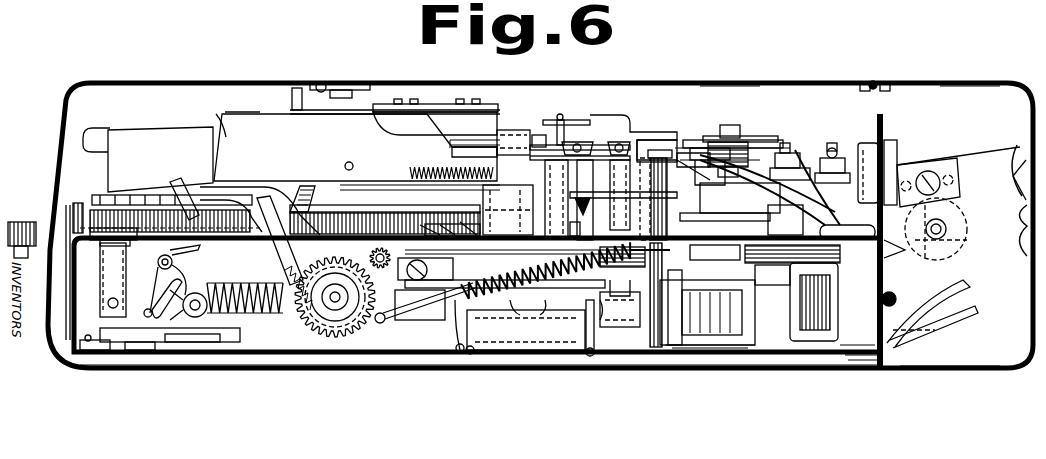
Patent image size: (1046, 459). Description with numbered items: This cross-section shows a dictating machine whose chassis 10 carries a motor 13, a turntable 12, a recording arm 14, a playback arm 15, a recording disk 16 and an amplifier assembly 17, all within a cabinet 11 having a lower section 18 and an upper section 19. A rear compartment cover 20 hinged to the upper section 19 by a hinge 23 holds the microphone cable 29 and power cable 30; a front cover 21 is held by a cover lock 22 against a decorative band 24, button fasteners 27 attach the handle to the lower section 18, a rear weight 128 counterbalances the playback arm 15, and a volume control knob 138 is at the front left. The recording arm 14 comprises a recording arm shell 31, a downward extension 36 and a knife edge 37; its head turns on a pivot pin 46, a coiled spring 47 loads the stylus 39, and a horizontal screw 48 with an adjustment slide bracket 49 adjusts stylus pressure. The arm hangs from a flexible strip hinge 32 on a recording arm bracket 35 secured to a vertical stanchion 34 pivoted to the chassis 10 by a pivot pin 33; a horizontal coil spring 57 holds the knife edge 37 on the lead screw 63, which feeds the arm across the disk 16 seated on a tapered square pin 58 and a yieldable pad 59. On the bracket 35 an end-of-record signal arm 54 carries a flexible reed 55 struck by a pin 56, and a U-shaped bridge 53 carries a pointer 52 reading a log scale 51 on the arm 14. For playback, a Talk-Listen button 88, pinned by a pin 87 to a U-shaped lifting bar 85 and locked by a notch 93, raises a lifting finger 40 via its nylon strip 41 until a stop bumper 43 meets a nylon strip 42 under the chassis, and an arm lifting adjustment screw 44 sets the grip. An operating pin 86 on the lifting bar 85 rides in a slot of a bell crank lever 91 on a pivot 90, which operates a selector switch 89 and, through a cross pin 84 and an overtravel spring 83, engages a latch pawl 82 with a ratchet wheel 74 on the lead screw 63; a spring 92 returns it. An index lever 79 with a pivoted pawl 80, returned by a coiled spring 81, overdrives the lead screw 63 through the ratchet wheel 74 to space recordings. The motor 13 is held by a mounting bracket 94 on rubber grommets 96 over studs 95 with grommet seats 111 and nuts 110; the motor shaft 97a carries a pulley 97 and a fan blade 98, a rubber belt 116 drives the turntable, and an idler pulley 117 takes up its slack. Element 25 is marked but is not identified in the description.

The frame 10 is at (893, 254).
The housing 11 is at (86, 81).
The end wall 12 is at (90, 225).
The motor 13 is at (888, 286).
The cover plate 14 is at (236, 100).
The bracket 15 is at (104, 162).
The comb plate 16 is at (150, 205).
The solenoid 17 is at (720, 355).
The housing bottom 18 is at (952, 367).
The housing top 19 is at (738, 82).
The housing end 20 is at (958, 82).
The rail 21 is at (262, 108).
The knob 22 is at (22, 222).
The screw 23 is at (879, 85).
The cap 24 is at (342, 86).
The plate 25 is at (1015, 145).
The shaft opening 27 is at (968, 236).
The arm 29 is at (972, 290).
The spring arm 30 is at (978, 312).
The plate 31 is at (224, 118).
The block 32 is at (640, 140).
The bracket 33 is at (700, 140).
The plate 34 is at (690, 216).
The post 35 is at (662, 157).
The bracket 36 is at (530, 315).
The screw block 37 is at (445, 276).
The lever 39 is at (275, 185).
The box 40 is at (505, 320).
The bracket 41 is at (440, 300).
The rack 42 is at (430, 215).
The spring 43 is at (500, 280).
The plate 44 is at (540, 288).
The pin 46 is at (352, 163).
The spring 47 is at (430, 170).
The post 48 is at (537, 134).
The block 49 is at (512, 129).
The post 51 is at (294, 86).
The rail 52 is at (390, 104).
The rail plate 53 is at (448, 104).
The bracket 54 is at (605, 112).
The plate 55 is at (578, 117).
The post 56 is at (563, 117).
The bracket 57 is at (593, 333).
The wedge 58 is at (325, 185).
The plate 59 is at (135, 190).
The gear 63 is at (345, 312).
The base 74 is at (320, 365).
The arm 79 is at (195, 185).
The link 80 is at (395, 312).
The lever 81 is at (470, 315).
The rack bar 82 is at (292, 260).
The spring 83 is at (280, 315).
The roller 84 is at (200, 300).
The foot 85 is at (118, 346).
The link 86 is at (150, 312).
The screw 87 is at (110, 300).
The support 88 is at (100, 228).
The plate 89 is at (232, 340).
The pivot 90 is at (158, 262).
The support 91 is at (150, 346).
The rod 92 is at (200, 251).
The bracket 93 is at (115, 276).
The column 94 is at (583, 198).
The terminal 95 is at (790, 150).
The block 96 is at (530, 200).
The coil 97 is at (752, 150).
The block 97a is at (733, 124).
The wires 98 is at (715, 198).
The terminal 110 is at (835, 150).
The stop 111 is at (580, 232).
The plate 116 is at (700, 150).
The plate 117 is at (760, 136).
The block 128 is at (872, 143).
The wall 138 is at (70, 210).